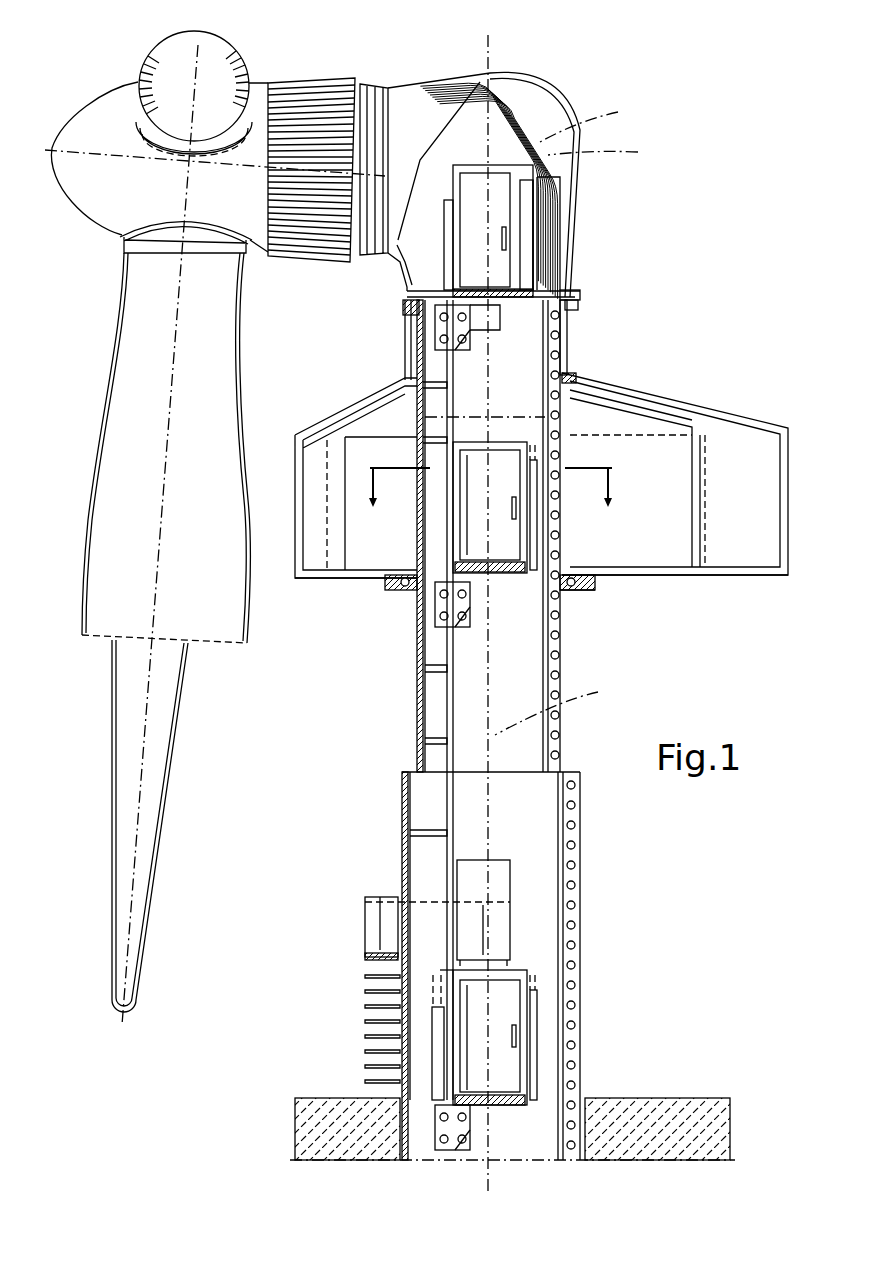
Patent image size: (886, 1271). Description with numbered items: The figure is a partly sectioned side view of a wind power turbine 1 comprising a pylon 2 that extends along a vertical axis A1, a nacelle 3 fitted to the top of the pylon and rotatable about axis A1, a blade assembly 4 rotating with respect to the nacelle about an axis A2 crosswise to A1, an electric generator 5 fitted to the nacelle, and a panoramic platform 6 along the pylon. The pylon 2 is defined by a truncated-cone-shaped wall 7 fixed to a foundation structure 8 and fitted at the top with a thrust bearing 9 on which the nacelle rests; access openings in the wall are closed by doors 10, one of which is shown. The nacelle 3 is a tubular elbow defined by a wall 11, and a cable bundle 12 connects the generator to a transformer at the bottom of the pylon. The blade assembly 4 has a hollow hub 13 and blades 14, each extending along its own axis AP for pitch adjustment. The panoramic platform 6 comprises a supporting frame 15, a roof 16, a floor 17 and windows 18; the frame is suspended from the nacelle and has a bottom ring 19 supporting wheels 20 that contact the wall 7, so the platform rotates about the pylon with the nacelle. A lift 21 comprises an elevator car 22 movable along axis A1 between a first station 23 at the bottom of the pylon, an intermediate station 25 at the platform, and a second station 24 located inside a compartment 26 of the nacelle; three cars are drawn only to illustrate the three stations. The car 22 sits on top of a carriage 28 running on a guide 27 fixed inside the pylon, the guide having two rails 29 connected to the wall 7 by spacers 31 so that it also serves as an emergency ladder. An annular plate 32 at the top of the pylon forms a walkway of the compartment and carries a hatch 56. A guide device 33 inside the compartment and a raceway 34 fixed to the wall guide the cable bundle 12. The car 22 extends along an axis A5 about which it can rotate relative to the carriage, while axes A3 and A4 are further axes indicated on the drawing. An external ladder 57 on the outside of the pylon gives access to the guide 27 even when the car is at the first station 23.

The wind power turbine 1 is at (700, 112).
The pylon 2 is at (590, 845).
The nacelle 3 is at (578, 108).
The blade assembly 4 is at (101, 264).
The electric generator 5 is at (332, 97).
The panoramic platform 6 is at (748, 415).
The truncated-cone-shaped wall 7 is at (418, 718).
The foundation structure 8 is at (585, 1167).
The thrust bearing 9 is at (578, 296).
The door 10 is at (498, 880).
The wall 11 is at (445, 100).
The cable bundle 12 is at (505, 103).
The hollow hub 13 is at (102, 187).
The blade 14 is at (152, 57).
The supporting frame 15 is at (575, 378).
The roof 16 is at (718, 423).
The floor 17 is at (660, 576).
The window 18 is at (759, 529).
The bottom ring 19 is at (580, 586).
The wheel 20 is at (410, 588).
The lift 21 is at (532, 971).
The elevator car 22 is at (497, 163).
The first station 23 is at (537, 1070).
The second station 24 is at (416, 272).
The intermediate station 25 is at (538, 547).
The compartment 26 is at (416, 143).
The guide 27 is at (435, 810).
The carriage 28 is at (476, 335).
The rail 29 is at (450, 862).
The spacer 31 is at (440, 388).
The annular plate 32 is at (500, 328).
The guide device 33 is at (562, 212).
The raceway 34 is at (562, 338).
The hatch 56 is at (405, 318).
The ladder 57 is at (360, 1015).
The vertical axis A1 is at (492, 62).
The axis A2 is at (108, 153).
The axis A3 is at (605, 152).
The axis A4 is at (591, 122).
The axis A5 is at (558, 705).
The blade axis AP is at (148, 693).